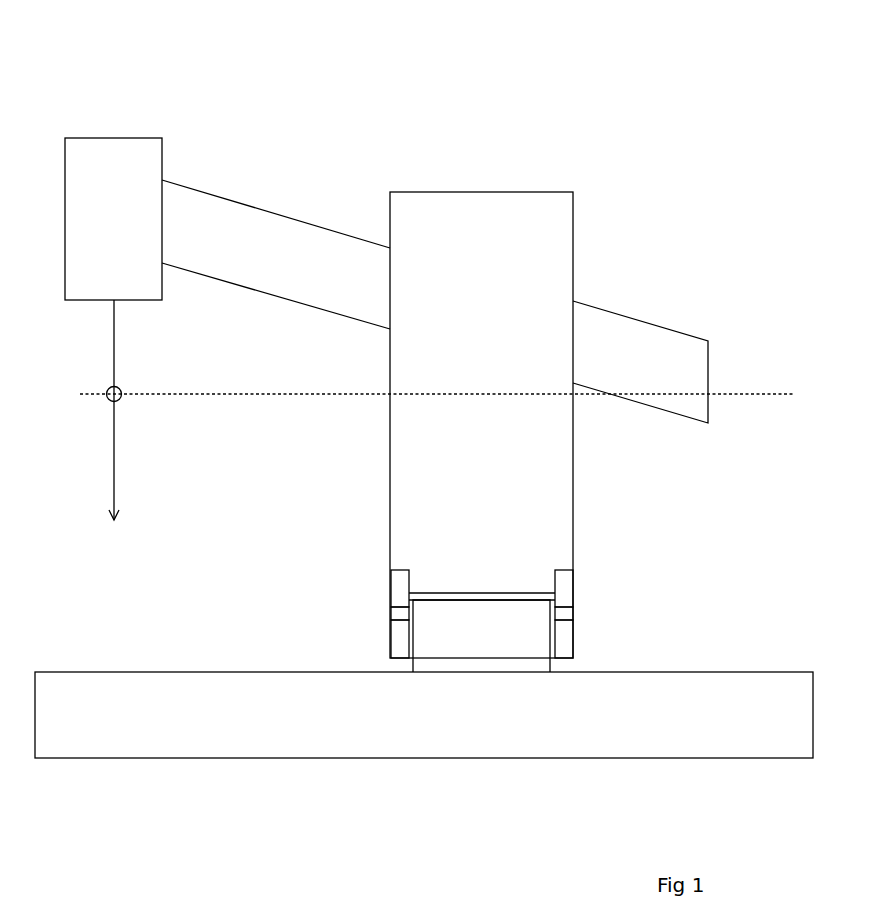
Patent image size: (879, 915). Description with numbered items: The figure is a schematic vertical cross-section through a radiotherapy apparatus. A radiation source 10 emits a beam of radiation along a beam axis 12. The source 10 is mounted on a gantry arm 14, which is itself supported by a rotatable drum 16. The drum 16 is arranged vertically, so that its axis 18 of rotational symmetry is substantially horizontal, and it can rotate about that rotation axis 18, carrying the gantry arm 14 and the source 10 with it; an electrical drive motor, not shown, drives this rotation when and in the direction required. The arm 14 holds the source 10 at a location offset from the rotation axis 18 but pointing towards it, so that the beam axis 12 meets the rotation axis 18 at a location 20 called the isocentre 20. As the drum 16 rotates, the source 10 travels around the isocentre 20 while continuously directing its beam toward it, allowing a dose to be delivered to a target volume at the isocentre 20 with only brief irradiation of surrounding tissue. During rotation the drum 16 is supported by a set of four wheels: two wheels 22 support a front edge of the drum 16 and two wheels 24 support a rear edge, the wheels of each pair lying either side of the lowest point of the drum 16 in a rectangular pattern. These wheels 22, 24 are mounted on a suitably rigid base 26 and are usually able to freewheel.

The radiation source 10 is at (75, 157).
The beam axis 12 is at (110, 340).
The gantry arm 14 is at (215, 222).
The rotatable drum 16 is at (528, 230).
The rotation axis 18 is at (330, 398).
The isocentre 20 is at (111, 402).
The front wheels 22 is at (391, 588).
The rear wheels 24 is at (575, 593).
The base 26 is at (482, 637).